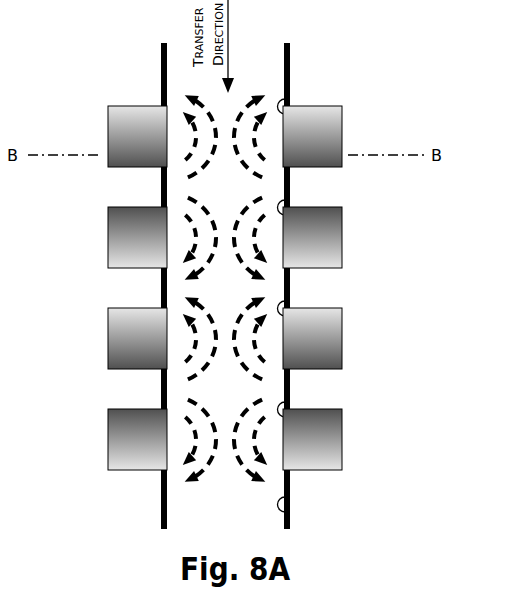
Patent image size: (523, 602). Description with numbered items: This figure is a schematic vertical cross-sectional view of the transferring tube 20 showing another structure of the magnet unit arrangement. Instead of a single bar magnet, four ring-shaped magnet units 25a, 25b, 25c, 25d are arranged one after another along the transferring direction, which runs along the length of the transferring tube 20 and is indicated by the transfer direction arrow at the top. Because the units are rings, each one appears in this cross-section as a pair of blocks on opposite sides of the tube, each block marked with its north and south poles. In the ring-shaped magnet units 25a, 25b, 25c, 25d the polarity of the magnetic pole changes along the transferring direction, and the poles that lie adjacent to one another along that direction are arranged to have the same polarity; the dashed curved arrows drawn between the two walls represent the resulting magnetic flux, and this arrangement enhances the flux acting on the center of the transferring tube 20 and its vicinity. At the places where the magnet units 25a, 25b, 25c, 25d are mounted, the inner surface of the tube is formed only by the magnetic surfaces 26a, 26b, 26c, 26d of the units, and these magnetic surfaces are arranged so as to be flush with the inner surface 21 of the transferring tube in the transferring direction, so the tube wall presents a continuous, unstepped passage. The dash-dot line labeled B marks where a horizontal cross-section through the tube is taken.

The transferring tube 20 is at (291, 64).
The inner surface of the transferring tube 21 is at (286, 497).
The magnet unit 25a is at (362, 134).
The magnet unit 25b is at (362, 238).
The magnet unit 25c is at (362, 338).
The magnet unit 25d is at (362, 441).
The magnetic surface 26a is at (286, 100).
The magnetic surface 26b is at (286, 201).
The magnetic surface 26c is at (286, 302).
The magnetic surface 26d is at (286, 403).